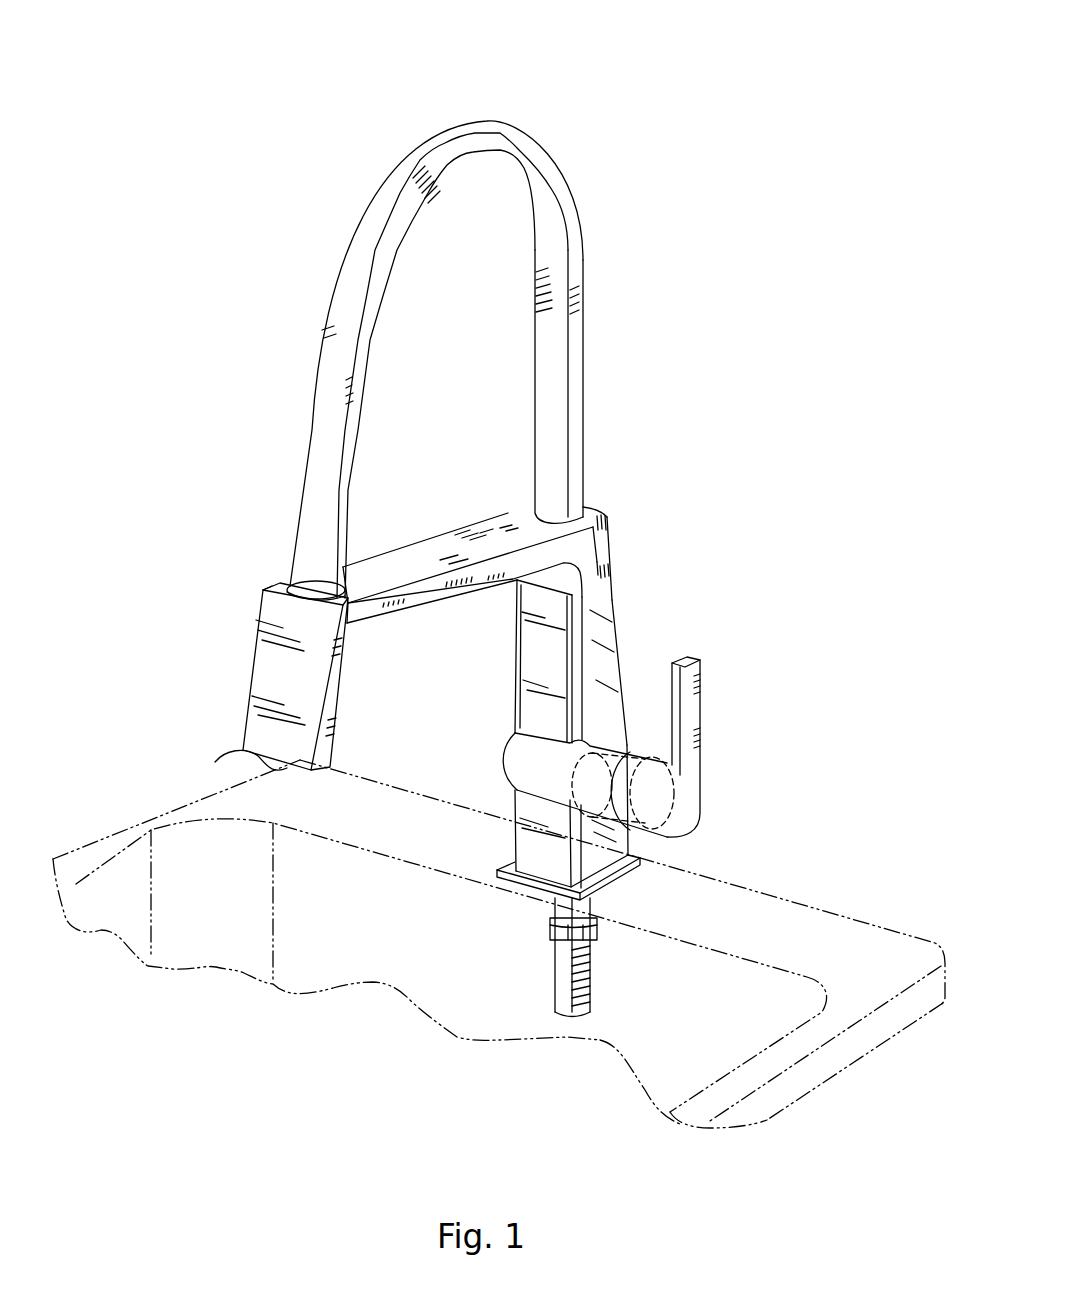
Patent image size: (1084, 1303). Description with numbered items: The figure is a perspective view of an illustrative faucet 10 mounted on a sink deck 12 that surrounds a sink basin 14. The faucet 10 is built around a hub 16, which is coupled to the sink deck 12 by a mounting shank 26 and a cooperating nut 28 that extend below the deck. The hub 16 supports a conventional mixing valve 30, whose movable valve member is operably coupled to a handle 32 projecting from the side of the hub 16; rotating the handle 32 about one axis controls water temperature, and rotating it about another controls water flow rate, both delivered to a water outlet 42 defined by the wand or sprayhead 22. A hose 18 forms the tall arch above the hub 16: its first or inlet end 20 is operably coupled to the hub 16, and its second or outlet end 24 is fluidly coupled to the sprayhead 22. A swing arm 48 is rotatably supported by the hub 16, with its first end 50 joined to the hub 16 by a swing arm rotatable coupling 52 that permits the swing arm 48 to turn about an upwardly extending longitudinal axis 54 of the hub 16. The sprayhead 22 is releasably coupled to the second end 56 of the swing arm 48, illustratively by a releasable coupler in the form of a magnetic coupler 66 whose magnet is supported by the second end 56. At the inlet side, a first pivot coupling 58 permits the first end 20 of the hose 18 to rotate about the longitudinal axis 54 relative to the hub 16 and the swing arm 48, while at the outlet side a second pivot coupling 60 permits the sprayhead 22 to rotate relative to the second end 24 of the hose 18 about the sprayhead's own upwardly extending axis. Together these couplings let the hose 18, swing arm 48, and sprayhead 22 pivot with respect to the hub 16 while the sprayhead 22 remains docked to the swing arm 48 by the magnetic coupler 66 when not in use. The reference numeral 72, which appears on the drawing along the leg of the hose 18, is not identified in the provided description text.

The faucet 10 is at (760, 127).
The sink deck 12 is at (817, 927).
The sink basin 14 is at (430, 1010).
The hub 16 is at (608, 623).
The hose 18 is at (567, 163).
The first or inlet end 20 is at (593, 498).
The wand or sprayhead 22 is at (250, 676).
The second or outlet end 24 is at (255, 567).
The mounting shank 26 is at (593, 977).
The nut 28 is at (550, 932).
The mixing valve 30 is at (593, 755).
The handle 32 is at (700, 713).
The water outlet 42 is at (216, 761).
The swing arm 48 is at (428, 532).
The first end of the swing arm 50 is at (620, 532).
The swing arm rotatable coupling 52 is at (655, 566).
The longitudinal axis of hub 54 is at (357, 647).
The second end of the swing arm 56 is at (363, 633).
The first pivot coupling 58 is at (523, 497).
The second pivot coupling 60 is at (292, 587).
The magnetic coupler 66 is at (257, 588).
The spout leg 72 is at (581, 328).